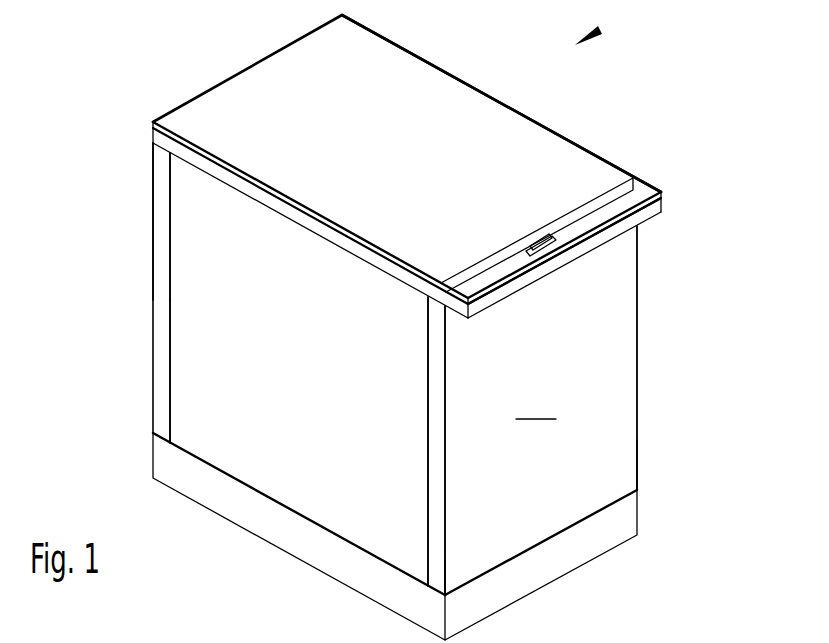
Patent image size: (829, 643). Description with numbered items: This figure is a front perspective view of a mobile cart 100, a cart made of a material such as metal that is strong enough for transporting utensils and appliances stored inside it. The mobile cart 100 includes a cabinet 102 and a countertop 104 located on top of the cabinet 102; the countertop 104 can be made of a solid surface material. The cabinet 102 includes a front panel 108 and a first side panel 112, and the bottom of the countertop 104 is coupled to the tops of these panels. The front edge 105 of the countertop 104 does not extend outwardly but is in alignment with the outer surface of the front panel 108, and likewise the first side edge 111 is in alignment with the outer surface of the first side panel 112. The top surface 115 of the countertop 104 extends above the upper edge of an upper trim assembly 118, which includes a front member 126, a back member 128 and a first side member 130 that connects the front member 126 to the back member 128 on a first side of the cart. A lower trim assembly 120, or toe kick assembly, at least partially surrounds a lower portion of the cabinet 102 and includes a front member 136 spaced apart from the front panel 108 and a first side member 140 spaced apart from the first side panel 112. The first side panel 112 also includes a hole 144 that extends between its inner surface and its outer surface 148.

The mobile cart 100 is at (600, 30).
The cabinet 102 is at (666, 282).
The countertop 104 is at (511, 121).
The front edge 105 is at (387, 252).
The front panel 108 is at (217, 337).
The first side edge 111 is at (634, 226).
The first side panel 112 is at (607, 348).
The top surface 115 is at (438, 96).
The upper trim assembly 118 is at (180, 177).
The lower trim assembly 120 is at (614, 484).
The front member 126 is at (300, 221).
The back member 128 is at (638, 190).
The first side member 130 is at (527, 276).
The front member 136 is at (278, 520).
The first side member 140 is at (547, 558).
The hole 144 is at (537, 245).
The outer surface 148 is at (538, 405).